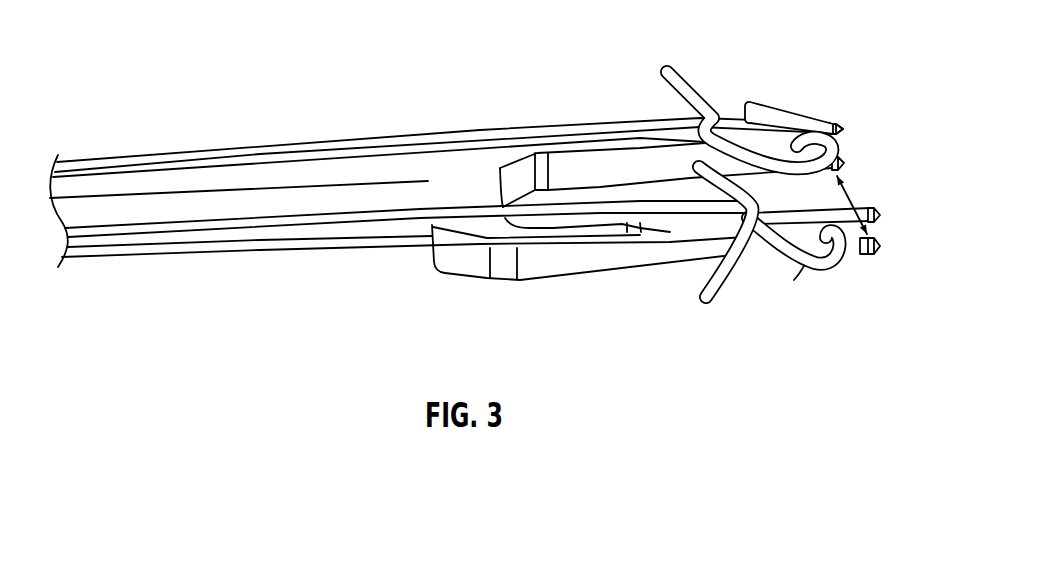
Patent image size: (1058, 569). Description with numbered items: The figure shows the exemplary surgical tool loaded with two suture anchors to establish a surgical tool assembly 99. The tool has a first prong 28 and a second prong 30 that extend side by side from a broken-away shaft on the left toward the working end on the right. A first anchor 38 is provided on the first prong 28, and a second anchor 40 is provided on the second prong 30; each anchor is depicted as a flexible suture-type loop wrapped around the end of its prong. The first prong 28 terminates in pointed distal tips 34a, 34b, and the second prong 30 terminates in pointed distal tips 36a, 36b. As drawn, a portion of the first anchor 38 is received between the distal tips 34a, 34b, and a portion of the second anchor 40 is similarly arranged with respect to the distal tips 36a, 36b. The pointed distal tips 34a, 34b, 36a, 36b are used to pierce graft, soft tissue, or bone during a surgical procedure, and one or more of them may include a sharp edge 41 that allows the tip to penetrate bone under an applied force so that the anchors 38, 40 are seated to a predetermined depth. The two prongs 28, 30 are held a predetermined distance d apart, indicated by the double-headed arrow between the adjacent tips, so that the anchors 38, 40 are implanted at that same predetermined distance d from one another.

The surgical tool assembly 99 is at (146, 49).
The first prong 28 is at (590, 172).
The second prong 30 is at (593, 255).
The pointed distal tip 34a is at (841, 128).
The pointed distal tip 34b is at (843, 164).
The pointed distal tip 36a is at (878, 214).
The pointed distal tip 36b is at (878, 248).
The first anchor 38 is at (770, 112).
The second anchor 40 is at (807, 258).
The sharp edge 41 is at (847, 130).
The predetermined distance d is at (856, 193).